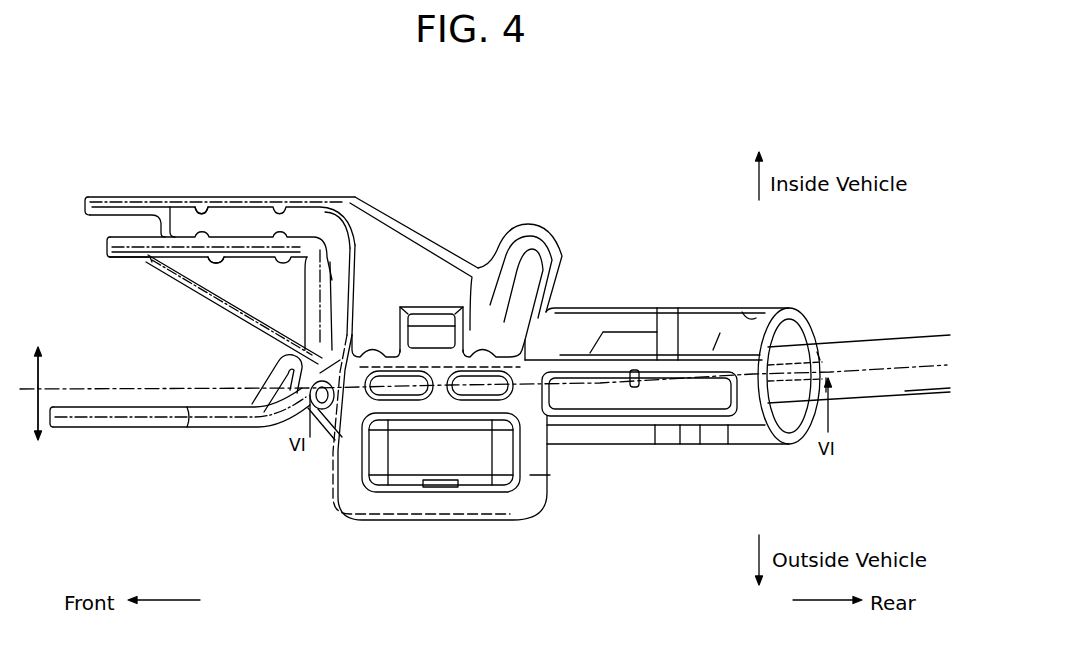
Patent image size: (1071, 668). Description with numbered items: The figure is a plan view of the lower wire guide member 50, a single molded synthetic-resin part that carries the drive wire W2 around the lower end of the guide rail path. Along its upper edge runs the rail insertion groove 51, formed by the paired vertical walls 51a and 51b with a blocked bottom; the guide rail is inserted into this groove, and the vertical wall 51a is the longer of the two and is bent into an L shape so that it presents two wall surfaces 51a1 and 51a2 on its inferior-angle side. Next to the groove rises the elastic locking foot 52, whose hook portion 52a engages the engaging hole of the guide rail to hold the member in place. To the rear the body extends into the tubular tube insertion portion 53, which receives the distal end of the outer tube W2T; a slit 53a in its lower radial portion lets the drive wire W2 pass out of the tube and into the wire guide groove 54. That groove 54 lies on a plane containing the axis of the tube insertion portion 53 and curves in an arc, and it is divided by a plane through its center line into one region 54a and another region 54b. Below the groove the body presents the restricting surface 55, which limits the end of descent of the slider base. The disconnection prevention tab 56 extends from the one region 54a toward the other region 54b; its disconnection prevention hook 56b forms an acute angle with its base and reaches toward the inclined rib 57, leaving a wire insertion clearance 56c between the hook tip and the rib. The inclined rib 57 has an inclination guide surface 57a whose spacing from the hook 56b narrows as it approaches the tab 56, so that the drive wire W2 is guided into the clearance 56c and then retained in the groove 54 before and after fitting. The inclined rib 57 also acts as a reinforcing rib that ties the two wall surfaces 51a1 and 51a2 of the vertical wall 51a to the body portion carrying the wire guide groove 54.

The wire guide member 50 is at (685, 290).
The rail insertion groove 51 is at (297, 225).
The vertical wall 51a is at (183, 246).
The wall surface 51a1 is at (217, 262).
The wall surface 51a2 is at (283, 259).
The vertical wall 51b is at (108, 196).
The elastic locking foot 52 is at (462, 265).
The hook portion 52a is at (527, 236).
The tubular tube insertion portion 53 is at (777, 442).
The slit 53a is at (818, 350).
The wire guide groove 54 is at (317, 400).
The one region 54a is at (110, 429).
The another region 54b is at (132, 355).
The restricting surface 55 is at (652, 413).
The disconnection prevention tab 56 is at (242, 381).
The disconnection prevention hook 56b is at (306, 353).
The wire insertion clearance 56c is at (430, 322).
The inclined rib 57 is at (196, 302).
The inclination guide surface 57a is at (163, 267).
The drive wire W2 is at (222, 418).
The outer tube W2T is at (910, 390).